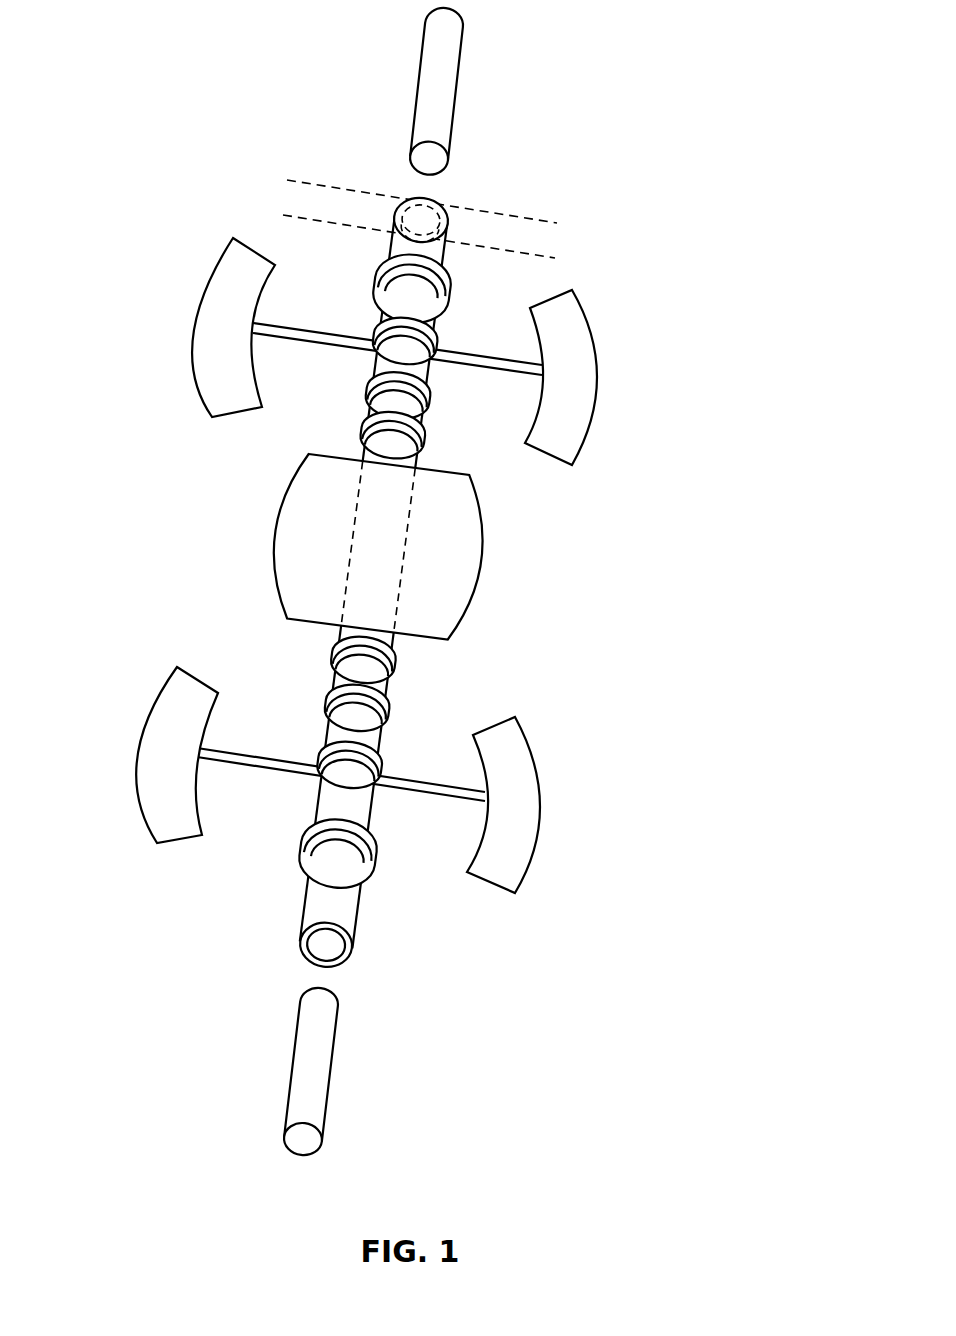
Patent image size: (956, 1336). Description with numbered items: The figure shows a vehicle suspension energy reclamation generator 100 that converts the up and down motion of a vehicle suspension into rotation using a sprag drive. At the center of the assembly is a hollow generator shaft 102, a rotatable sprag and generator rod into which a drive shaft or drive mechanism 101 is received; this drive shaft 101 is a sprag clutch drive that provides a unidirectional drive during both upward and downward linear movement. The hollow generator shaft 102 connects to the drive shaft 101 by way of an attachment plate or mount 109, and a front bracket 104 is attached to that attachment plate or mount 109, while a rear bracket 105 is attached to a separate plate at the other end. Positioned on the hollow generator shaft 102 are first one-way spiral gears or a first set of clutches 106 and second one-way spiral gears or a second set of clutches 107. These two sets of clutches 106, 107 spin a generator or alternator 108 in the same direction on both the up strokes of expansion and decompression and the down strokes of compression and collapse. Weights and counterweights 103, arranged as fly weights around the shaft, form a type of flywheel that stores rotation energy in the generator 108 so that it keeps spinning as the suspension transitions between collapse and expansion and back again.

The vehicle suspension energy reclamation generator 100 is at (371, 578).
The drive shaft or drive mechanism 101 is at (438, 92).
The hollow generator shaft 102 is at (440, 257).
The weights and counterweights 103 is at (213, 336).
The front bracket 104 is at (455, 286).
The rear bracket 105 is at (302, 857).
The first one-way spiral gears or first set of clutches 106 is at (355, 430).
The second one-way spiral gears or second set of clutches 107 is at (430, 397).
The generator or alternator 108 is at (455, 573).
The attachment plate or mount 109 is at (363, 215).